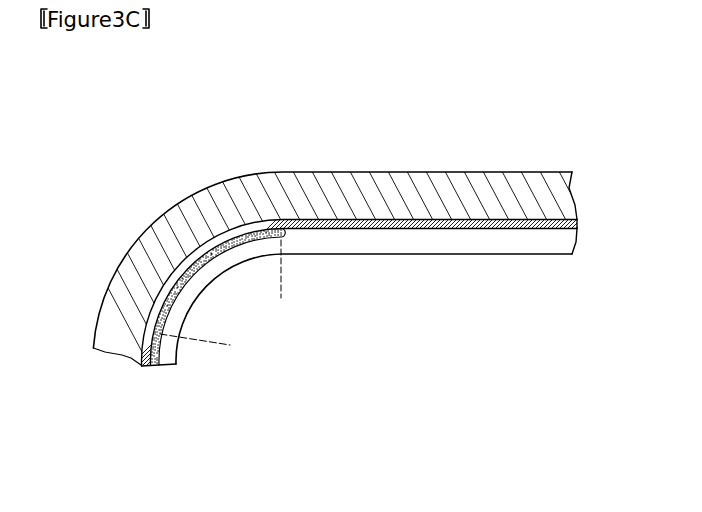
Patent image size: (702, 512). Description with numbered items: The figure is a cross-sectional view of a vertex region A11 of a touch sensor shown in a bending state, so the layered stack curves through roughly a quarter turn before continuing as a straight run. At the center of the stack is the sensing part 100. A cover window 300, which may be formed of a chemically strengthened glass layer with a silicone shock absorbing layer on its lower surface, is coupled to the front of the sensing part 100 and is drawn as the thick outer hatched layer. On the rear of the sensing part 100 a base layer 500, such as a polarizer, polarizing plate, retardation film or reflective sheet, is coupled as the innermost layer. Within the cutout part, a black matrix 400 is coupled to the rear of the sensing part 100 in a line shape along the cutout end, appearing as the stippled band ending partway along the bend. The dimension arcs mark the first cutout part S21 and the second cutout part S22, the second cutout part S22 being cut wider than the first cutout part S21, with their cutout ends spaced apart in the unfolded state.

The bending region A11 is at (92, 152).
The cover window 300 is at (383, 172).
The sensing part 100 is at (425, 230).
The black matrix 400 is at (178, 363).
The base layer 500 is at (510, 256).
The first cutout part S21 is at (279, 293).
The second cutout part S22 is at (218, 349).